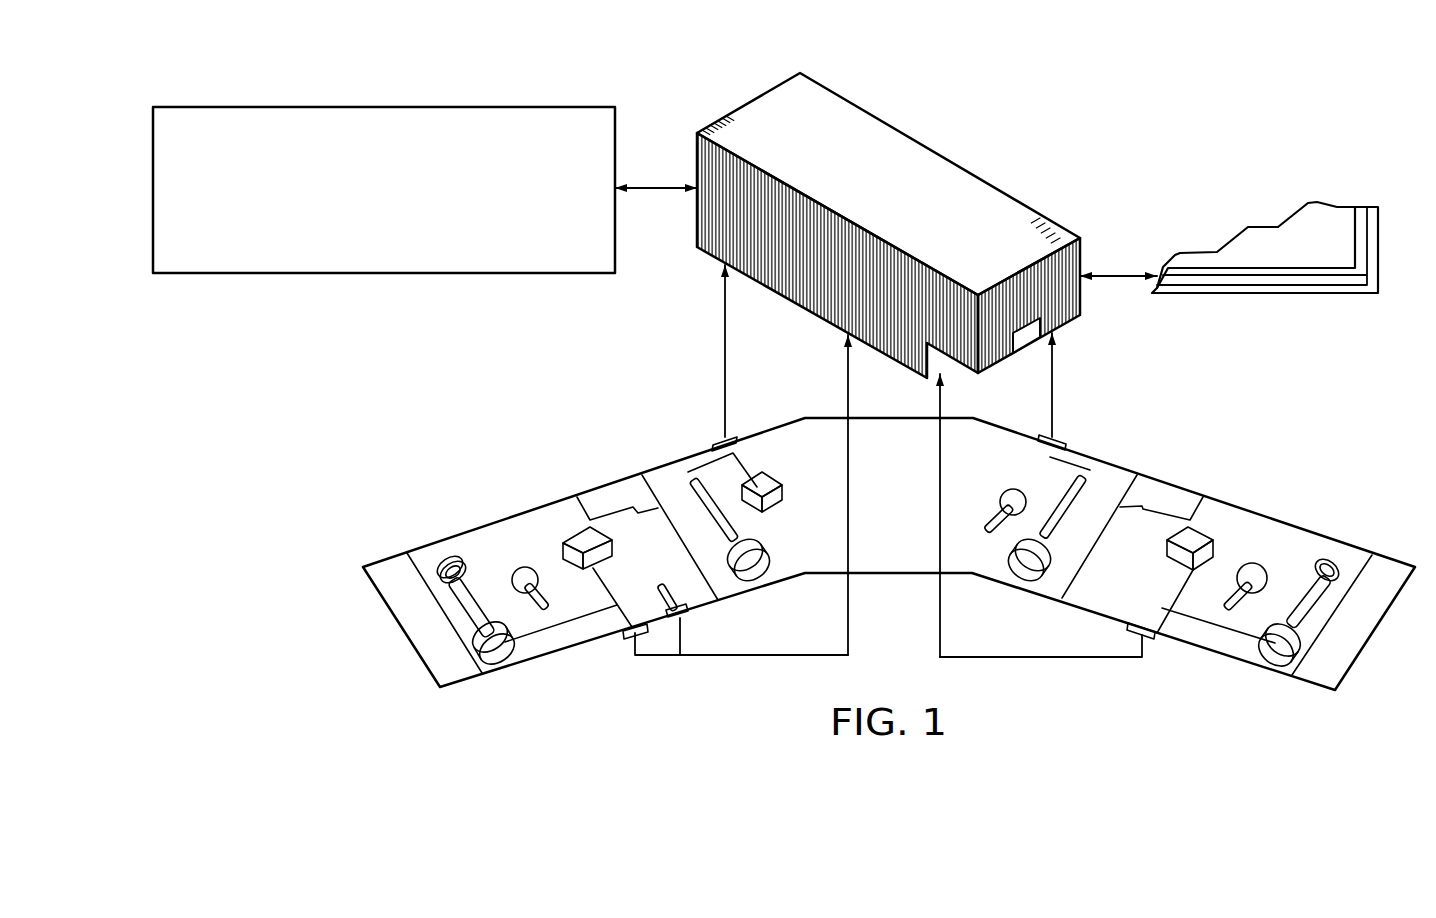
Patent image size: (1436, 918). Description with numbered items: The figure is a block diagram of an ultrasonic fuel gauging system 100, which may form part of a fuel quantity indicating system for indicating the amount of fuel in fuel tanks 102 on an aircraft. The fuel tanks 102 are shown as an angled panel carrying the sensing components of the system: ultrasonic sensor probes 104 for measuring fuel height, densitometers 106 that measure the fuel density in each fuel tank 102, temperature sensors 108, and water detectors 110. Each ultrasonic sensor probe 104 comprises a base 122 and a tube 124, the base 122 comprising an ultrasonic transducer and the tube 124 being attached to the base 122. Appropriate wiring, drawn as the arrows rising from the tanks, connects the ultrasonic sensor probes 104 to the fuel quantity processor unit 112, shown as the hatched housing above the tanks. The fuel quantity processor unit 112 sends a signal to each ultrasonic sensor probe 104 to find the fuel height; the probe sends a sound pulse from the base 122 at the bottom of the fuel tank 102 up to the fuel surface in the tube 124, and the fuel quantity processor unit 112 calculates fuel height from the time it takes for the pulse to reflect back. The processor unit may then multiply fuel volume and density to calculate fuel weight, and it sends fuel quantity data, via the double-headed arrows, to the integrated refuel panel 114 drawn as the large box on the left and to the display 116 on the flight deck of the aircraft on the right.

The ultrasonic fuel gauging system 100 is at (998, 72).
The fuel tanks 102 is at (560, 640).
The ultrasonic sensor probes 104 is at (445, 560).
The densitometers 106 is at (1200, 530).
The temperature sensors 108 is at (681, 598).
The water detectors 110 is at (1257, 563).
The fuel quantity processor unit 112 is at (758, 110).
The integrated refuel panel 114 is at (407, 208).
The display 116 is at (1257, 237).
The base 122 is at (498, 652).
The tube 124 is at (458, 598).